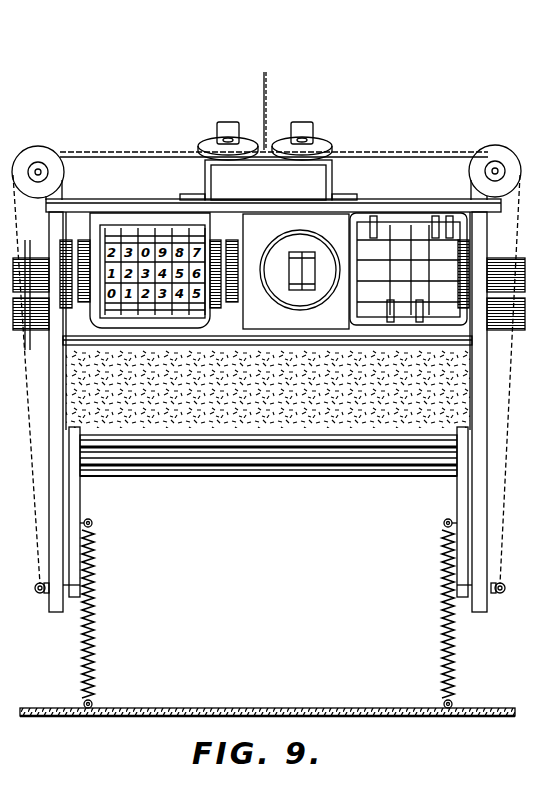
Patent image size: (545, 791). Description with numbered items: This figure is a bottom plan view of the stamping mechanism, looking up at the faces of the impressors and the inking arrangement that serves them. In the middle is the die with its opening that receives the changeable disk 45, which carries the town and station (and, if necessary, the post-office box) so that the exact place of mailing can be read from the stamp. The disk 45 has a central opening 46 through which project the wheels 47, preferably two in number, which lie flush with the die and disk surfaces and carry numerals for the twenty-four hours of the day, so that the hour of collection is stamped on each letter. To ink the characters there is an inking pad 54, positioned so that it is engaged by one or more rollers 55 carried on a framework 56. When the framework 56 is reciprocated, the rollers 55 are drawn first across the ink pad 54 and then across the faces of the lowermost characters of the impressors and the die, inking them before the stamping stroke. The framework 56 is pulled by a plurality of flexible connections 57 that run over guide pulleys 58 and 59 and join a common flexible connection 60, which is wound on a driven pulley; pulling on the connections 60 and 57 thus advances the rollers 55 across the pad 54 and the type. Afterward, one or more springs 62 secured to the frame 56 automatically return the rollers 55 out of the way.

The changeable disk 45 is at (296, 271).
The central opening 46 is at (352, 222).
The wheels 47 is at (312, 252).
The inking pad 54 is at (268, 459).
The rollers 55 is at (255, 458).
The framework 56 is at (482, 480).
The flexible connections 57 is at (27, 376).
The guide pulleys 58 is at (48, 155).
The guide pulleys 59 is at (211, 138).
The common flexible connection 60 is at (268, 112).
The springs 62 is at (96, 642).